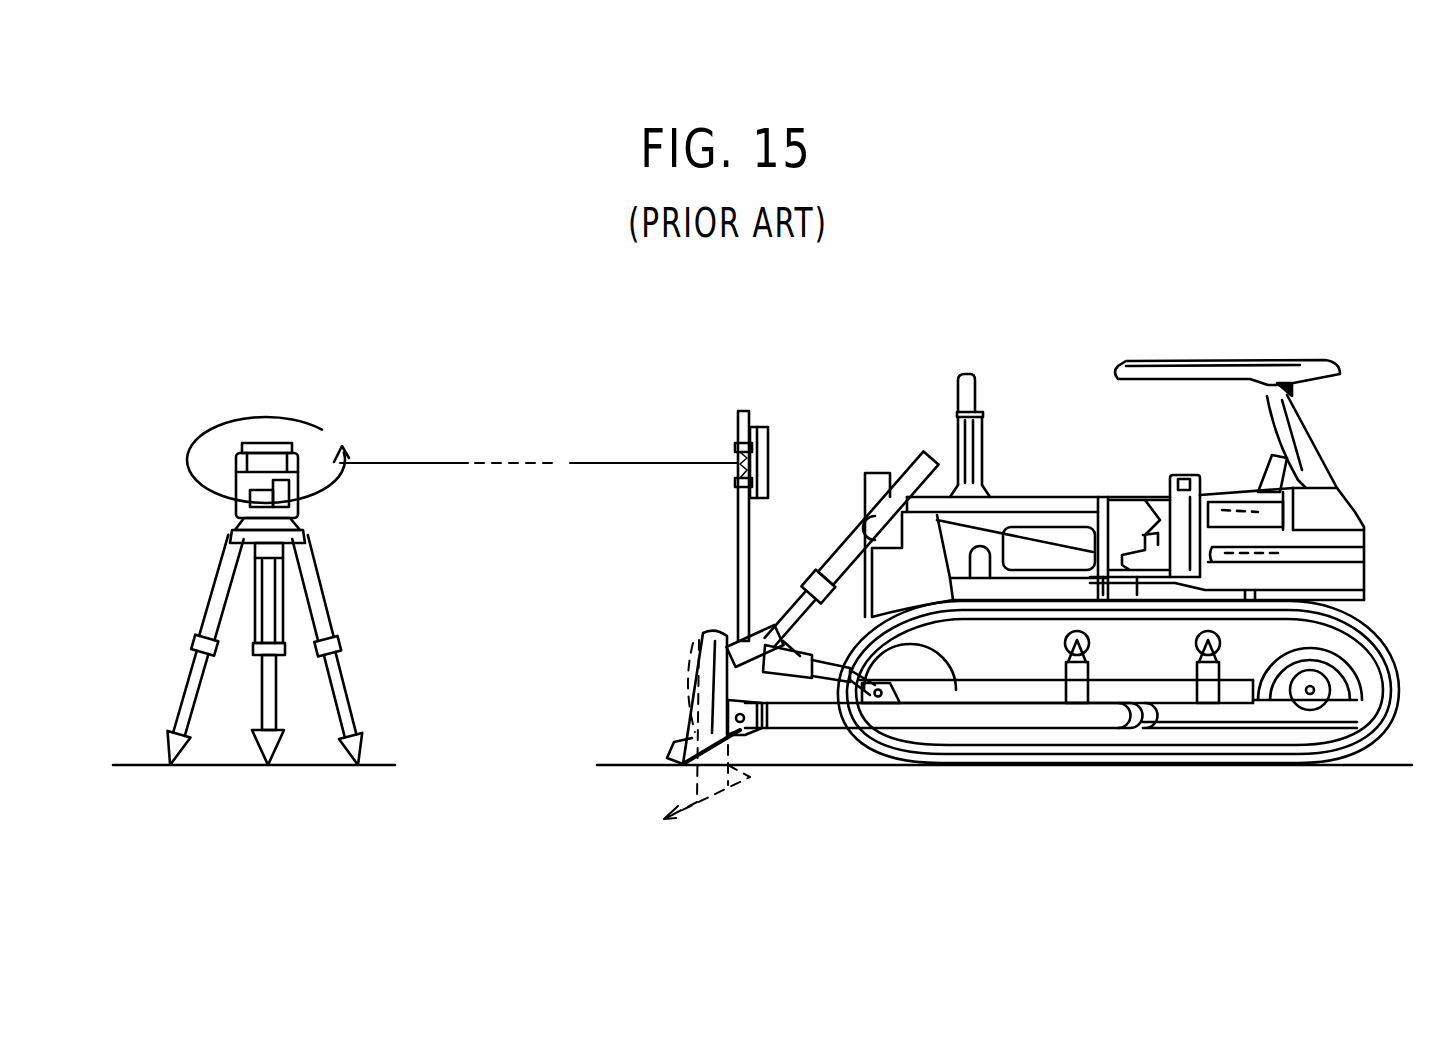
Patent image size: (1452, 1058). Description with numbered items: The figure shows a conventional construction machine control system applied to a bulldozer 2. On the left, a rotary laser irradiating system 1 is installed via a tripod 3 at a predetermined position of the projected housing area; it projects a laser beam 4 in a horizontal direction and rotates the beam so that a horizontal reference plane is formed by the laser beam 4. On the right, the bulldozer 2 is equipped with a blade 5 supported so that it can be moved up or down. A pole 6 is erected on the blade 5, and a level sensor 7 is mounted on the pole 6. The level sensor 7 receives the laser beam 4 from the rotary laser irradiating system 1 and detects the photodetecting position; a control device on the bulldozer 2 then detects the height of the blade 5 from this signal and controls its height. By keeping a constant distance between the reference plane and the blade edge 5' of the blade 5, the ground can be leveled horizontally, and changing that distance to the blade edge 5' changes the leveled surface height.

The rotary laser irradiating system 1 is at (295, 395).
The bulldozer 2 is at (1056, 395).
The tripod 3 is at (228, 548).
The laser beam 4 is at (397, 463).
The blade 5 is at (665, 697).
The blade edge 5' is at (657, 759).
The pole 6 is at (737, 535).
The level sensor 7 is at (770, 445).